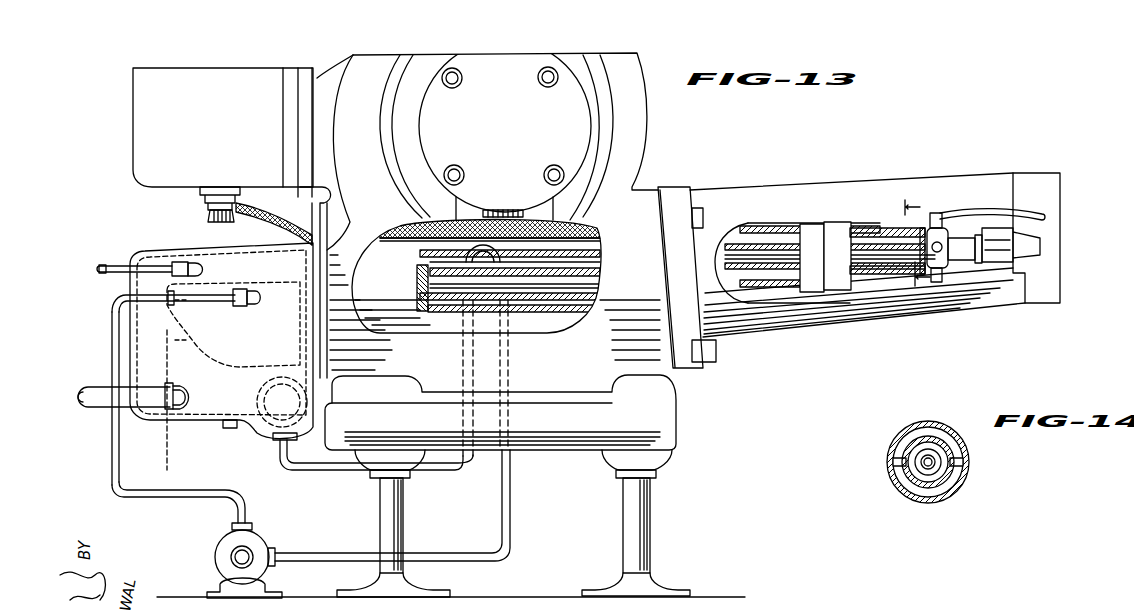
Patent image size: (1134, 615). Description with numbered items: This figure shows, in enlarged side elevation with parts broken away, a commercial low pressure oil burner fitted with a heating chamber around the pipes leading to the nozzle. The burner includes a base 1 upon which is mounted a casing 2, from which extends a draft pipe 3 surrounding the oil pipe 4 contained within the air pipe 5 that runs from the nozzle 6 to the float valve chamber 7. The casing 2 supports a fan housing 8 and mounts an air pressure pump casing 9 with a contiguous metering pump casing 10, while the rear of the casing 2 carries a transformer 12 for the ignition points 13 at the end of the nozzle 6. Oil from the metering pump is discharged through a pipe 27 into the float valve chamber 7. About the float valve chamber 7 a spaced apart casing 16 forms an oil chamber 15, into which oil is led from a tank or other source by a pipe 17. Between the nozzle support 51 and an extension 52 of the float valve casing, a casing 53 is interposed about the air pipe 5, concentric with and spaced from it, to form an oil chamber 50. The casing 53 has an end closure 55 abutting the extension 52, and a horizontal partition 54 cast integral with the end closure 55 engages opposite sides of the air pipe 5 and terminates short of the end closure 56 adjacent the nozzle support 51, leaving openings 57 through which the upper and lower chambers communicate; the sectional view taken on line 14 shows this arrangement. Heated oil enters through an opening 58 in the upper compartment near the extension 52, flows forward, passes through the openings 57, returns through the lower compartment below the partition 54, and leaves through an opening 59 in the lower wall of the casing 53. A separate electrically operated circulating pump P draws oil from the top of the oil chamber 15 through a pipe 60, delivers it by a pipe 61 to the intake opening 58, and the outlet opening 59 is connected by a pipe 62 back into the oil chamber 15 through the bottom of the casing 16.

In FIG. 13, the base 1 is at (556, 440).
In FIG. 13, the casing 2 is at (378, 350).
In FIG. 13, the draft pipe 3 is at (720, 200).
In FIG. 14, the oil pipe 4 is at (928, 470).
In FIG. 13, the air pipe 5 is at (958, 240).
In FIG. 14, the air pipe 5 is at (940, 478).
In FIG. 13, the nozzle 6 is at (1040, 238).
In FIG. 13, the float valve chamber 7 is at (112, 326).
In FIG. 13, the fan housing 8 is at (640, 168).
In FIG. 13, the air pressure pump casing 9 is at (612, 133).
In FIG. 13, the metering pump casing 10 is at (588, 116).
In FIG. 13, the transformer 12 is at (232, 223).
In FIG. 13, the ignition points 13 is at (1040, 212).
In FIG. 13, the section line 14— 14 is at (918, 246).
In FIG. 13, the oil chamber 15 is at (122, 351).
In FIG. 13, the spaced apart casing 16 is at (124, 288).
In FIG. 13, the pipe 17 is at (93, 410).
In FIG. 13, the pipe 27 is at (107, 265).
In FIG. 13, the oil chamber 50 is at (882, 283).
In FIG. 14, the oil chamber 50 is at (955, 480).
In FIG. 13, the nozzle support 51 is at (941, 278).
In FIG. 13, the extension 52 is at (478, 271).
In FIG. 13, the casing 53 is at (533, 300).
In FIG. 14, the casing 53 is at (962, 462).
In FIG. 13, the partition 54 is at (747, 255).
In FIG. 14, the partition 54 is at (960, 452).
In FIG. 13, the end closure 55 is at (423, 268).
In FIG. 13, the end closure 56 is at (905, 240).
In FIG. 13, the openings 57 is at (907, 270).
In FIG. 13, the opening 58 is at (468, 250).
In FIG. 13, the opening 59 is at (458, 296).
In FIG. 13, the pipe 60 is at (177, 496).
In FIG. 13, the pipe 61 is at (446, 552).
In FIG. 13, the pipe 62 is at (325, 466).
In FIG. 13, the circulating pump P is at (262, 540).